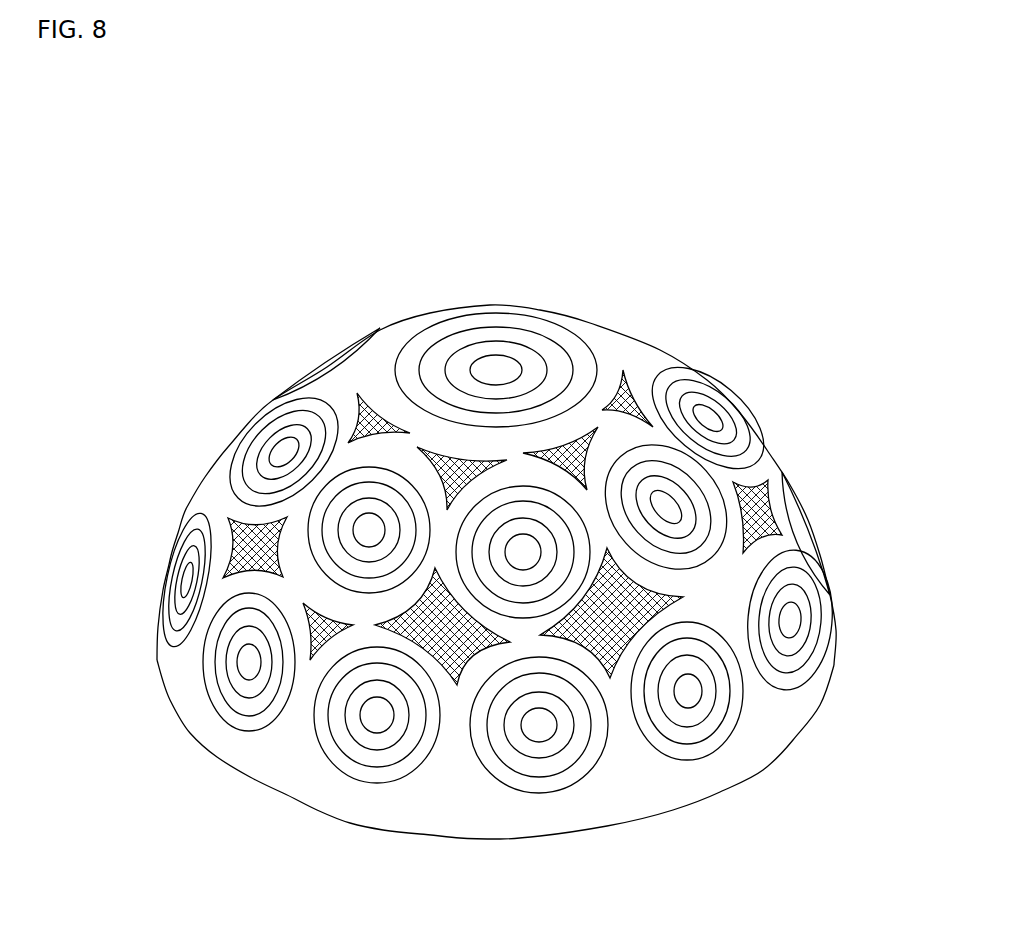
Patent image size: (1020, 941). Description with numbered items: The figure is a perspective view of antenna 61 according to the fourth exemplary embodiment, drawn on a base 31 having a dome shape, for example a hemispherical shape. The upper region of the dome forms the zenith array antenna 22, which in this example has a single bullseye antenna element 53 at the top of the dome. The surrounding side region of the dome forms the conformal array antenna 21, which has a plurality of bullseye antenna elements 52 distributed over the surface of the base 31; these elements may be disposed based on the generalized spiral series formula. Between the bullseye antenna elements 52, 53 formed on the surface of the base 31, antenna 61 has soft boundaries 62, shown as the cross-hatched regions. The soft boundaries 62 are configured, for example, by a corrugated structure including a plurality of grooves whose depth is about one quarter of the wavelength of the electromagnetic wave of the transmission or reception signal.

The conformal array antenna 21 is at (199, 368).
The zenith array antenna 22 is at (470, 294).
The base 31 is at (747, 740).
The bullseye antenna element 52 is at (317, 738).
The bullseye antenna element 53 is at (600, 338).
The antenna 61 is at (599, 244).
The soft boundary 62 is at (457, 690).